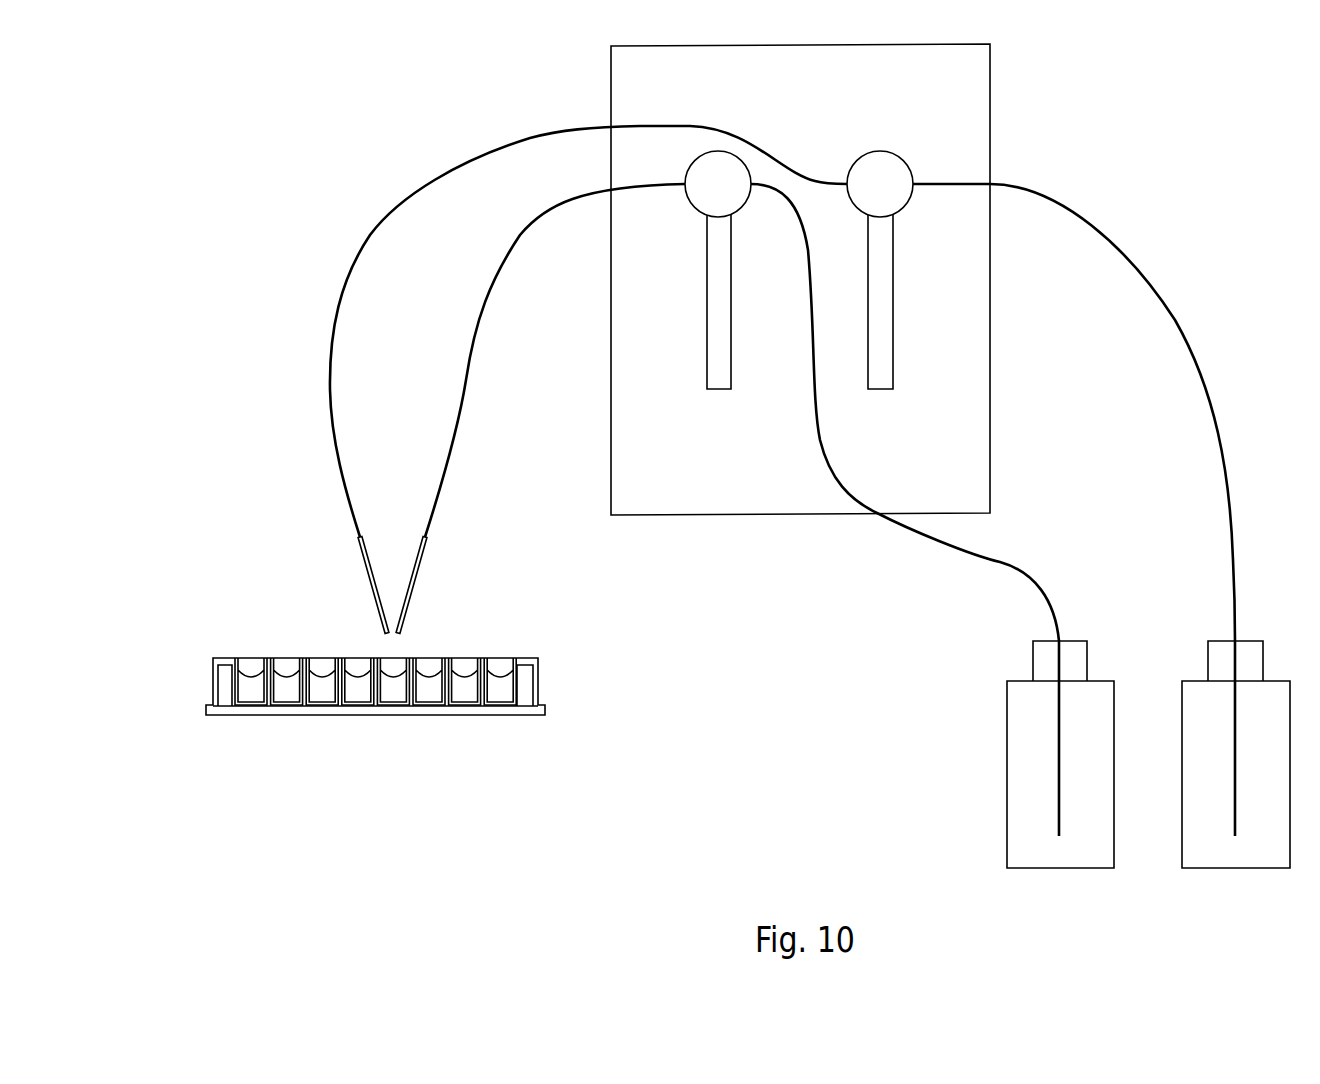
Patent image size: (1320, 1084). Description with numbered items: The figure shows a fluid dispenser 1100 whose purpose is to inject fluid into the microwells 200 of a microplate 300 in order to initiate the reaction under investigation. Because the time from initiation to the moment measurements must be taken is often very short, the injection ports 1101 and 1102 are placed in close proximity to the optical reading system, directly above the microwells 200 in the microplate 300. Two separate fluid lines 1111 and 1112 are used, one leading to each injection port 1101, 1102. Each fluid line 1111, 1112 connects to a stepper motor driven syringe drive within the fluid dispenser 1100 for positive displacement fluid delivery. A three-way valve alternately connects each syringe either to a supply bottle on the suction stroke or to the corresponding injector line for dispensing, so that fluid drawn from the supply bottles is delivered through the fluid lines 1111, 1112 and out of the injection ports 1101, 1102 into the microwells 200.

The fluid dispenser 1100 is at (800, 279).
The fluid line 1112 is at (404, 188).
The fluid line 1111 is at (467, 387).
The injection port 1101 is at (415, 590).
The injection port 1102 is at (372, 592).
The microwells 200 is at (252, 673).
The microplate 300 is at (212, 693).